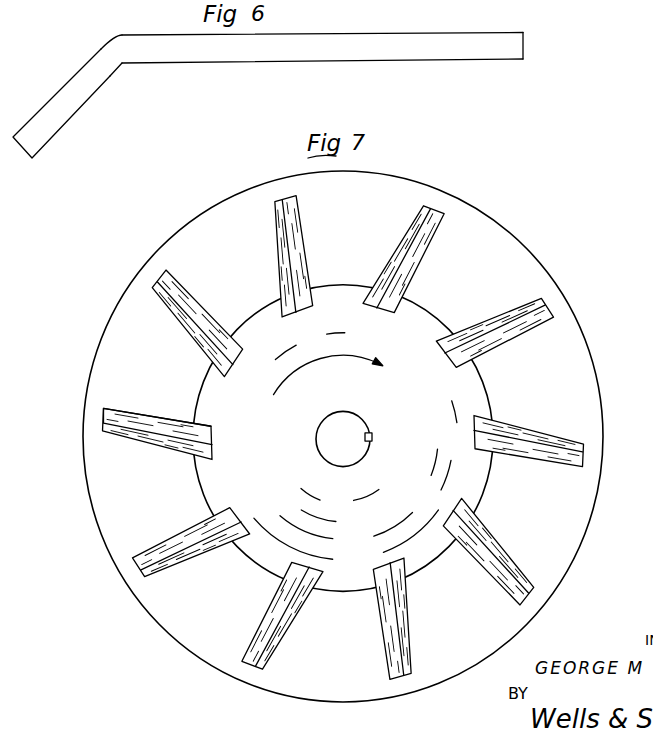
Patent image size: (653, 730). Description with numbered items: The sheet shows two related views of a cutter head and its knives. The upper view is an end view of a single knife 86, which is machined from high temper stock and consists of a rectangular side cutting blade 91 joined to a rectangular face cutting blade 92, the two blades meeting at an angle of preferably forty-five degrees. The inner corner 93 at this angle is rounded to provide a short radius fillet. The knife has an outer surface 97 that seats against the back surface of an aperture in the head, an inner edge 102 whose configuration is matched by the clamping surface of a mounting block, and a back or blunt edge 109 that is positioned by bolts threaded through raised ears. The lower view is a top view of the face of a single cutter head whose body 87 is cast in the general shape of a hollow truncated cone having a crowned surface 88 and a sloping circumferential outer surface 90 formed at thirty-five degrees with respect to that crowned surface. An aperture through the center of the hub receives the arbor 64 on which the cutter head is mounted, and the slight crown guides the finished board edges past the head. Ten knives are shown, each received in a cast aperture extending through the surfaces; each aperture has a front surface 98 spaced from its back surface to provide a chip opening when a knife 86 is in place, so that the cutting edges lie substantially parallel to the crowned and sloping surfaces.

In FIG. 6, the back edge 109 is at (232, 57).
In FIG. 6, the outer surface 97 is at (301, 33).
In FIG. 6, the side cutting blade 91 is at (327, 50).
In FIG. 6, the inner edge 102 is at (285, 63).
In FIG. 6, the inner corner 93 is at (125, 63).
In FIG. 6, the face cutting blade 92 is at (65, 105).
In FIG. 7, the cutter head body 87 is at (602, 303).
In FIG. 7, the sloping circumferential outer surface 90 is at (566, 403).
In FIG. 7, the crowned surface 88 is at (343, 438).
In FIG. 7, the arbor 64 is at (327, 438).
In FIG. 7, the front surface 98 is at (158, 427).
In FIG. 7, the knife 86 is at (158, 449).